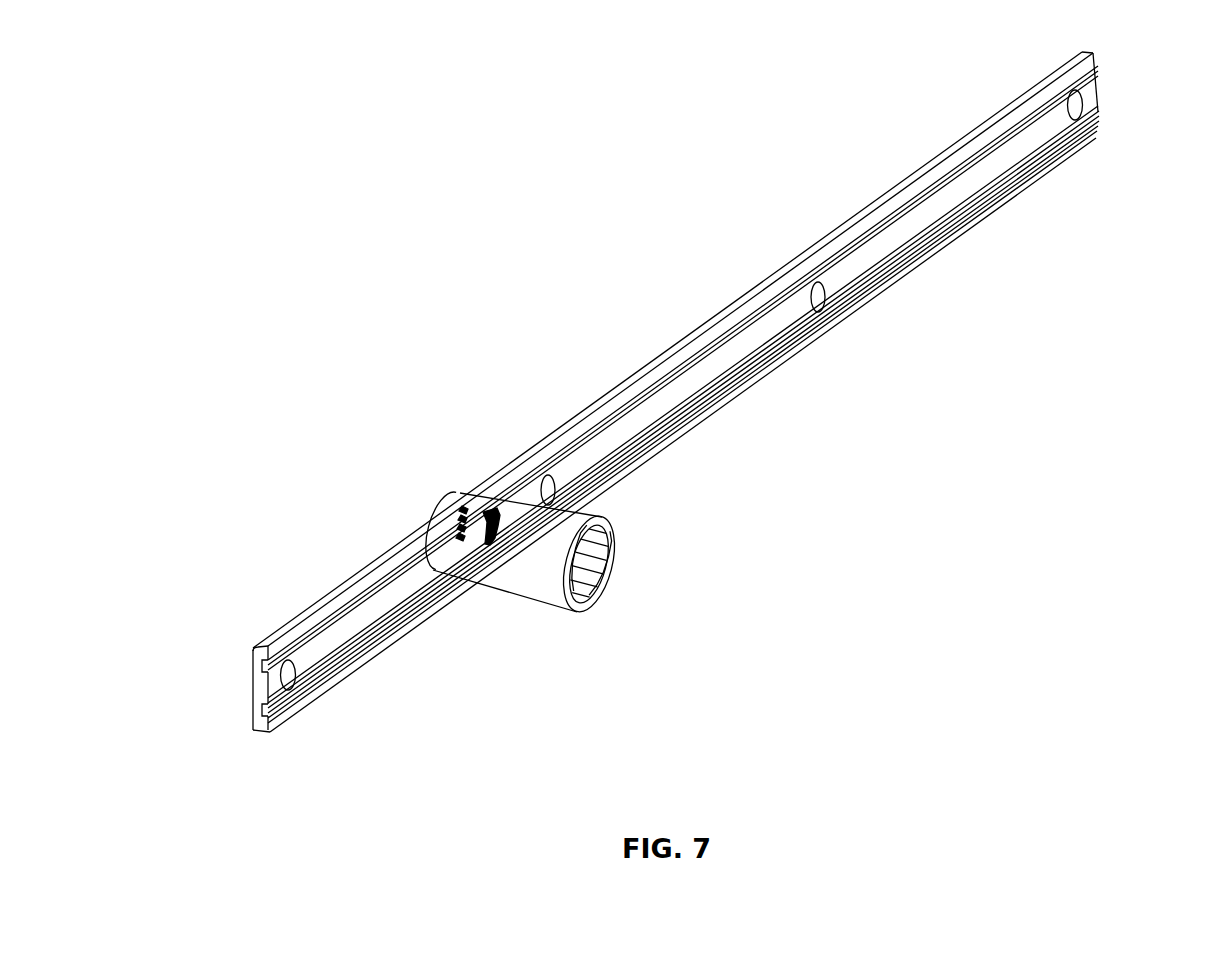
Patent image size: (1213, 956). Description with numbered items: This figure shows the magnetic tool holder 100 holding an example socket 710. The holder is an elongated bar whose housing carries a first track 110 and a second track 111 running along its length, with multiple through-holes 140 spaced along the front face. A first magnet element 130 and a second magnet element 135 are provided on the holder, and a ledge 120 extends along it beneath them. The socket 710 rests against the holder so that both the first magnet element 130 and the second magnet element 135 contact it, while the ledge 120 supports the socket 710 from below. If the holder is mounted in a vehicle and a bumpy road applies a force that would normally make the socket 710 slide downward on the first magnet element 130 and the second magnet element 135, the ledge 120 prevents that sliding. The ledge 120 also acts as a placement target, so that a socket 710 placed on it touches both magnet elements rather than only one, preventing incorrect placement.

The magnetic tool holder 100 is at (671, 395).
The first track 110 is at (264, 668).
The second track 111 is at (265, 712).
The ledge 120 is at (387, 663).
The first magnet element 130 is at (1084, 82).
The second magnet element 135 is at (1091, 128).
The through-holes 140 is at (824, 302).
The socket 710 is at (527, 609).